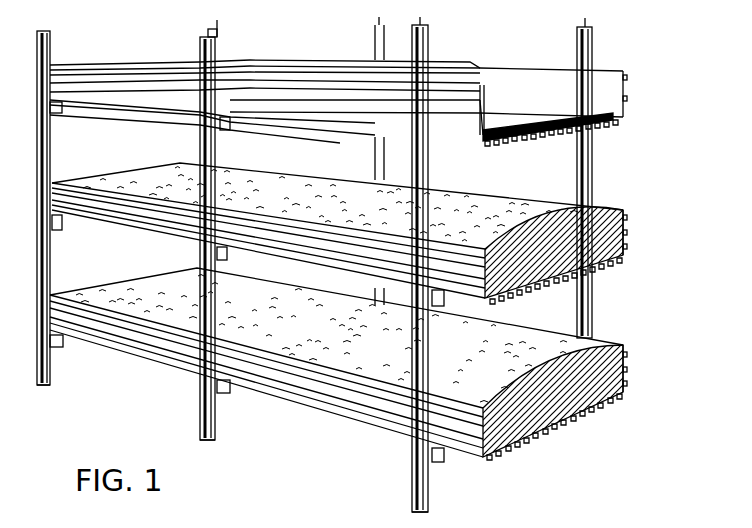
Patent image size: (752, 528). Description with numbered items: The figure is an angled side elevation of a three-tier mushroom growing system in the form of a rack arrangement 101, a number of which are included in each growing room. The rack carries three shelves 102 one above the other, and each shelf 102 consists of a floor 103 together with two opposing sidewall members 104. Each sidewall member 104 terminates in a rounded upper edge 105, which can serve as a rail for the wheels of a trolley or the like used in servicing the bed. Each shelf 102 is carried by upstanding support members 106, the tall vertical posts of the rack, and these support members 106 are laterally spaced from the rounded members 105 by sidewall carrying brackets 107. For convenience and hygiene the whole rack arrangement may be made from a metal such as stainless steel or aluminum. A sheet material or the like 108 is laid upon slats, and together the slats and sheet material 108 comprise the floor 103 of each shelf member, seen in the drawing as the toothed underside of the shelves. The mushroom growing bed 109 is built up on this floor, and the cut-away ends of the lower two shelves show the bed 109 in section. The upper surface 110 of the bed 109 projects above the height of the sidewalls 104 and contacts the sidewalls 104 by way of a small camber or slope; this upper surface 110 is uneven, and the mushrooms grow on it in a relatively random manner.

The three-tier rack arrangement 101 is at (113, 391).
The shelf 102 is at (605, 66).
The floor 103 is at (570, 137).
The sidewall member 104 is at (533, 88).
The rounded upper edge 105 is at (483, 90).
The upstanding support member 106 is at (410, 460).
The sidewall carrying bracket 107 is at (305, 110).
The sheet material 108 is at (560, 285).
The mushroom growing bed 109 is at (497, 252).
The upper surface of bed 110 is at (547, 208).